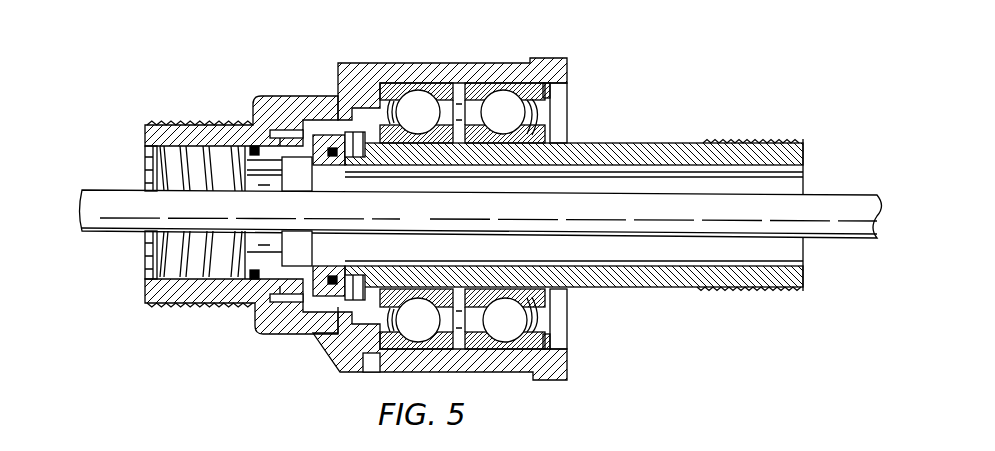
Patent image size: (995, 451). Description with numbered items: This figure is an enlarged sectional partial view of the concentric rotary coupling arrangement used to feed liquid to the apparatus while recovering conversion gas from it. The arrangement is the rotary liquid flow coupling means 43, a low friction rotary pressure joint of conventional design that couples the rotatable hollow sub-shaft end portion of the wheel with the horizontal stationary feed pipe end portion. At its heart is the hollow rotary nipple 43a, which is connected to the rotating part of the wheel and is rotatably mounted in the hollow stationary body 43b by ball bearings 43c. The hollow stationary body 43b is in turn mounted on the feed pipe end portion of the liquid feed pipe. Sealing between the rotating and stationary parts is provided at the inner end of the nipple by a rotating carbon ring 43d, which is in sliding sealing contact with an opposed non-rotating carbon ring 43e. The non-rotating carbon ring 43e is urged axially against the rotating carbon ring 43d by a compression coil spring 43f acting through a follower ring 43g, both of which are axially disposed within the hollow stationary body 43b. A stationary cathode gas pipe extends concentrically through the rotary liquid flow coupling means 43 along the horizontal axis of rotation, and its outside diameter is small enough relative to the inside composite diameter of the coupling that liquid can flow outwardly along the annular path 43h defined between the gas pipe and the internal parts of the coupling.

The rotary liquid flow coupling means 43 is at (566, 70).
The hollow rotary nipple 43a is at (590, 142).
The hollow stationary body 43b is at (567, 372).
The ball bearings 43c is at (500, 104).
The rotating carbon ring 43d is at (318, 150).
The non-rotating carbon ring 43e is at (301, 128).
The compression coil spring 43f is at (207, 263).
The follower ring 43g is at (255, 178).
The annular path 43h is at (740, 260).